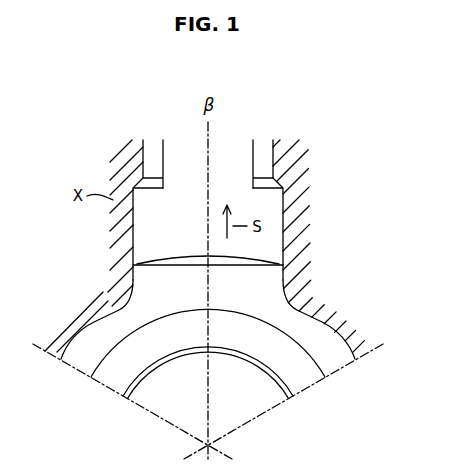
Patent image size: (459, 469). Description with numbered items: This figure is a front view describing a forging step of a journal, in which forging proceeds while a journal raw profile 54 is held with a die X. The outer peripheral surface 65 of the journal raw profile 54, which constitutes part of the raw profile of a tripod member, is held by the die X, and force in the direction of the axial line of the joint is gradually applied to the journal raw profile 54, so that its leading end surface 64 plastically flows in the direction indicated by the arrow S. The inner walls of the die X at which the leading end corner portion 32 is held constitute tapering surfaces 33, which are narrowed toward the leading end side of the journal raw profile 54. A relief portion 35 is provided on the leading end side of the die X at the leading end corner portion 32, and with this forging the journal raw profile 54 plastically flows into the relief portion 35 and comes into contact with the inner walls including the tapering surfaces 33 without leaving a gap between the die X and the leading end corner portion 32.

The relief portion 35 is at (181, 150).
The leading end corner portion 32 is at (286, 262).
The tapering surfaces 33 is at (288, 198).
The outer peripheral surface 65 is at (285, 276).
The journal raw profile 54 is at (147, 280).
The leading end surface 64 is at (187, 256).